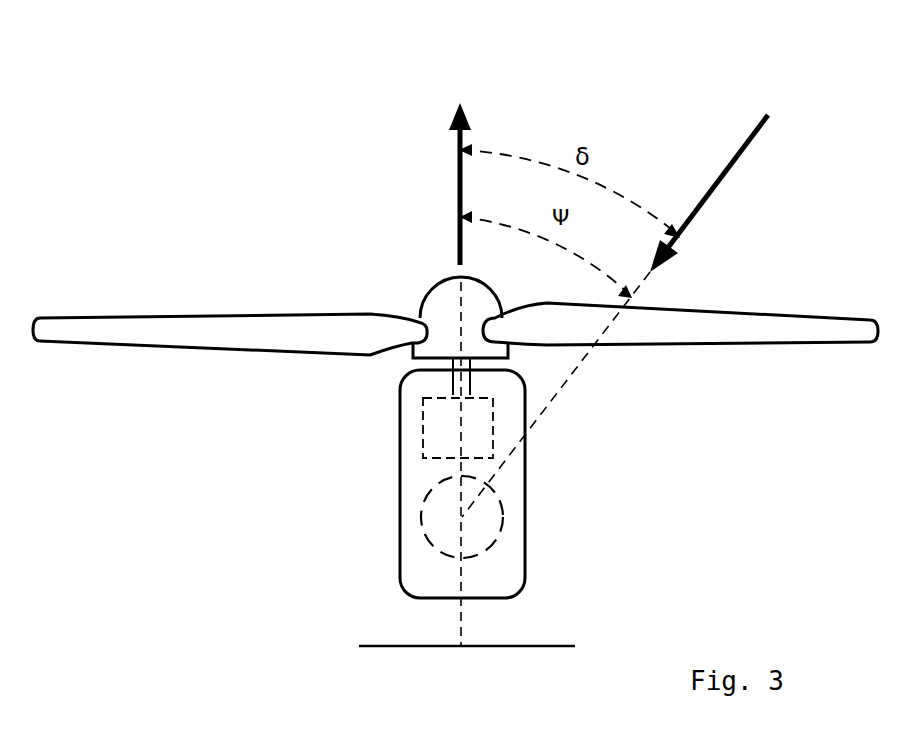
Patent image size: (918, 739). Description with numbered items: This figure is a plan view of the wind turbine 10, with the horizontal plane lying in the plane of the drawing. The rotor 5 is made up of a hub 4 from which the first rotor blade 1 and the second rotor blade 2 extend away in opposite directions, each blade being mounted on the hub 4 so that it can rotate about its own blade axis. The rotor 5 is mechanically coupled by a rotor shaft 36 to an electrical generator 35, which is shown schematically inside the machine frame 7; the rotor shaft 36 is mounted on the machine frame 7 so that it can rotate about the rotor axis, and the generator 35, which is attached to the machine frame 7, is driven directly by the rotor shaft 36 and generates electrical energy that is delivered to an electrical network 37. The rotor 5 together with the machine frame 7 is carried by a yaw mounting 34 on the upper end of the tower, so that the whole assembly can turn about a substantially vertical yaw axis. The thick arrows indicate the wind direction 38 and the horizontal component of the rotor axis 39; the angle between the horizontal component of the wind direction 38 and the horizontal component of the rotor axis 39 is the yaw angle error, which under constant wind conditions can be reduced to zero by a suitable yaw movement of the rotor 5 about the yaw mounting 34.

The wind turbine 10 is at (186, 80).
The rotor 5 is at (344, 266).
The hub 4 is at (434, 290).
The second rotor blade 2 is at (228, 354).
The first rotor blade 1 is at (714, 346).
The rotor shaft 36 is at (450, 364).
The machine frame 7 is at (400, 565).
The electrical generator 35 is at (422, 438).
The yaw mounting 34 is at (505, 520).
The horizontal component of the rotor axis 39 is at (457, 184).
The wind direction 38 is at (731, 160).
The electrical network 37 is at (400, 647).